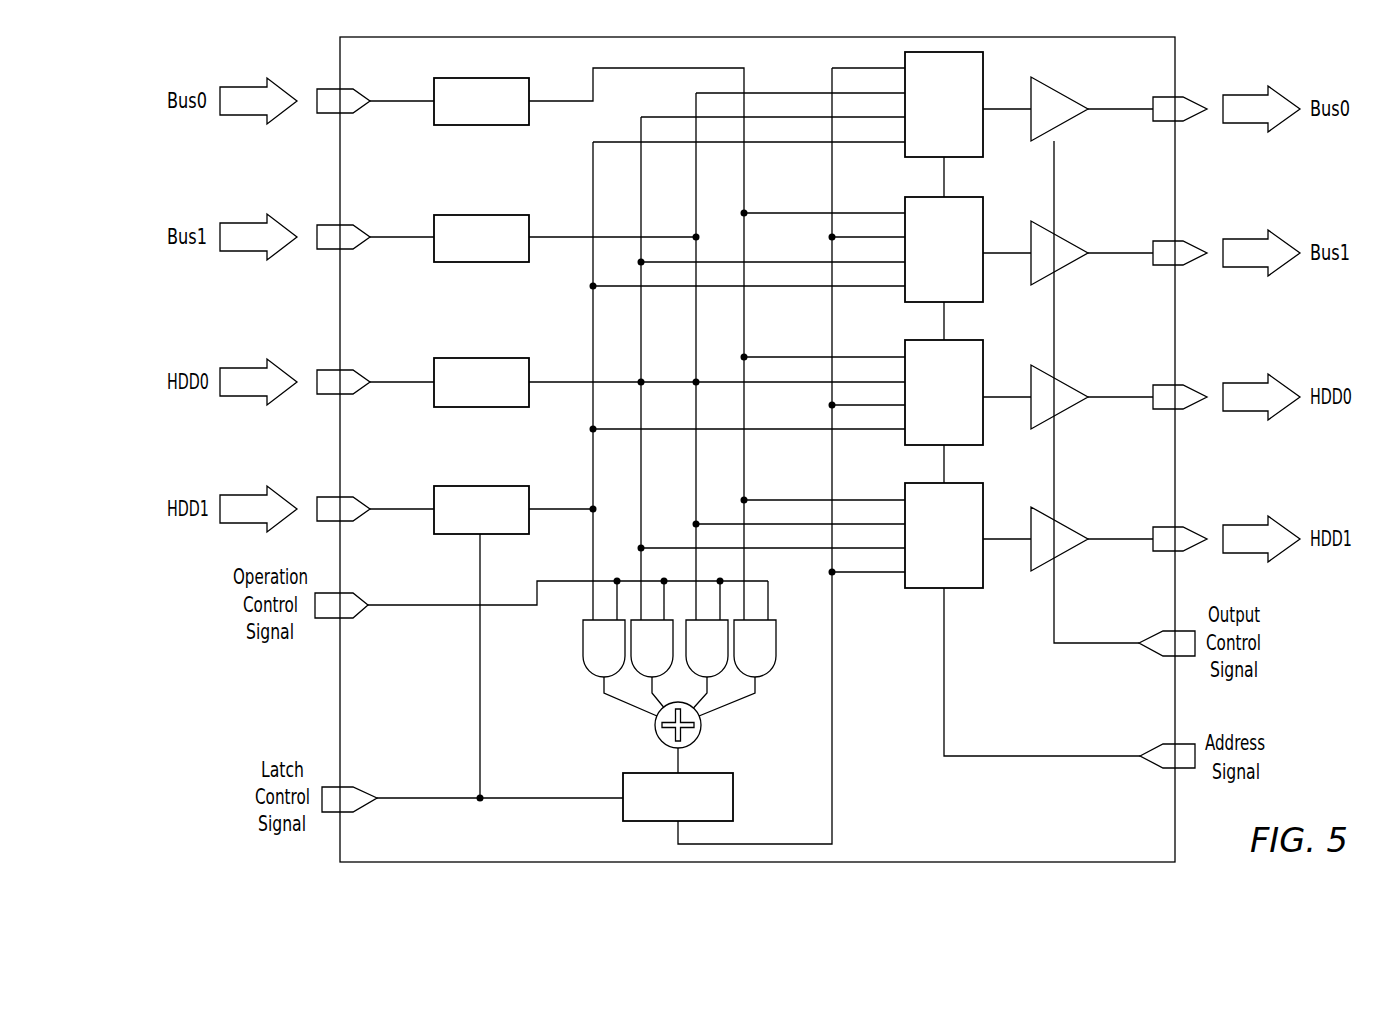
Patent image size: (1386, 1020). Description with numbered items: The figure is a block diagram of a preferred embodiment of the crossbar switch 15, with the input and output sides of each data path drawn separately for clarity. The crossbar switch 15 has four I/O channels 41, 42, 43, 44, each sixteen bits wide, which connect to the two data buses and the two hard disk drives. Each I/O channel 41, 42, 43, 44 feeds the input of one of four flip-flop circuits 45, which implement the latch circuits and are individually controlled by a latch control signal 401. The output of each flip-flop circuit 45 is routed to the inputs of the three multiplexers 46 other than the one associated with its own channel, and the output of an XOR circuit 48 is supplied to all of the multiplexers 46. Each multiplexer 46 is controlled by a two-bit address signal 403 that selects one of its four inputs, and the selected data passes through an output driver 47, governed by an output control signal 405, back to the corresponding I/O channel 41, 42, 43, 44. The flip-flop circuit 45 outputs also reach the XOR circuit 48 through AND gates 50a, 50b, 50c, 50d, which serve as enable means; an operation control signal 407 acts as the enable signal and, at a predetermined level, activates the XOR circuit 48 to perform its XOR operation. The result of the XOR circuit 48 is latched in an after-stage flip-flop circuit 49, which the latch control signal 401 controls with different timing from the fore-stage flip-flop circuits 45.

The crossbar switch 15 is at (341, 694).
The I/O channel 41 is at (327, 88).
The I/O channel 42 is at (327, 224).
The I/O channel 43 is at (327, 369).
The I/O channel 44 is at (327, 496).
The flip-flop circuit 45 is at (455, 127).
The multiplexer 46 is at (952, 138).
The output driver 47 is at (1062, 90).
The XOR circuit 48 is at (700, 738).
The flip-flop circuit 49 is at (733, 800).
The AND gate 50a is at (741, 655).
The AND gate 50b is at (693, 655).
The AND gate 50c is at (638, 655).
The AND gate 50d is at (590, 655).
The latch control signal 401 is at (367, 790).
The address signal 403 is at (1152, 750).
The output control signal 405 is at (1152, 636).
The operation control signal 407 is at (358, 613).